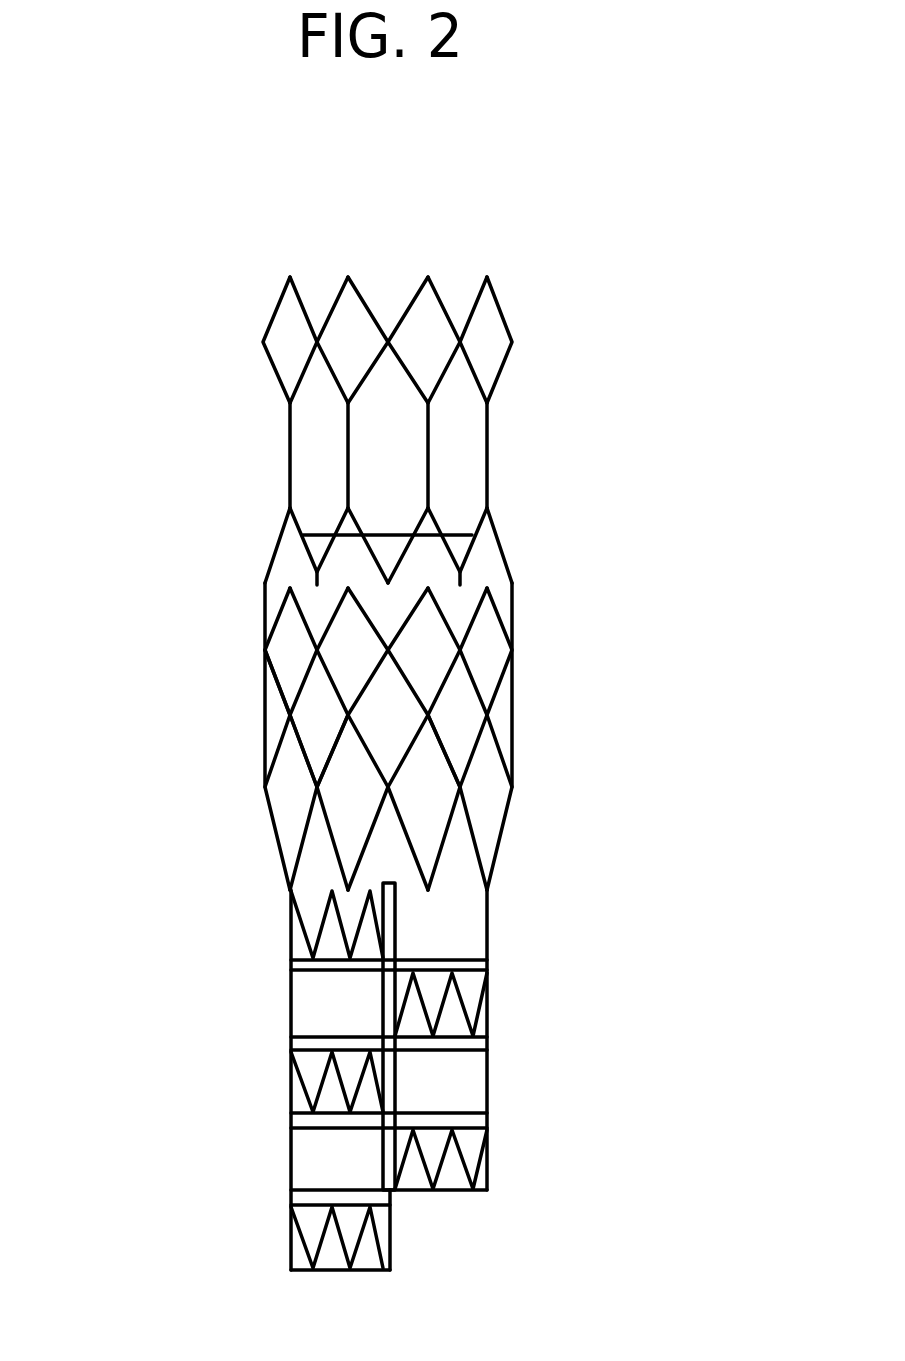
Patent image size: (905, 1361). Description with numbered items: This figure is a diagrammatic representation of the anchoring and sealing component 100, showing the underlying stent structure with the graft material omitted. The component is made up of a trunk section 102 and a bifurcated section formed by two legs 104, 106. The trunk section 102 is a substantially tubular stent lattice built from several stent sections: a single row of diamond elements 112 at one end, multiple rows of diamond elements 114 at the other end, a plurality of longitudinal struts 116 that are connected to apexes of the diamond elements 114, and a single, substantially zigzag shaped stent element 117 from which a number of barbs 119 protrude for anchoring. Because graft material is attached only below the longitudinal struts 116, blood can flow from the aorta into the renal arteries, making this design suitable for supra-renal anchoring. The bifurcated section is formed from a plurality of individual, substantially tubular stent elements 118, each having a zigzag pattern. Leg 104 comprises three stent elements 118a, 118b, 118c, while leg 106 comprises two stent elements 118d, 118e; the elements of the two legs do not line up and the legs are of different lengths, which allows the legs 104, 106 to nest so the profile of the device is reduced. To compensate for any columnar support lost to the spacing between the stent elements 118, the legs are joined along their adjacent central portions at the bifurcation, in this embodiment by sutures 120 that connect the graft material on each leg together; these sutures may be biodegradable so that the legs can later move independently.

The anchoring and sealing component 100 is at (103, 314).
The trunk section 102 is at (231, 893).
The leg 104 is at (292, 1012).
The leg 106 is at (487, 1083).
The diamond elements 112 is at (500, 307).
The diamond elements 114 is at (273, 688).
The longitudinal struts 116 is at (287, 458).
The zigzag shaped stent element 117 is at (292, 554).
The stent elements 118 is at (313, 953).
The stent element 118a is at (302, 956).
The stent element 118b is at (300, 1088).
The stent element 118c is at (300, 1250).
The stent element 118d is at (487, 1017).
The stent element 118e is at (487, 1172).
The barbs 119 is at (462, 580).
The sutures 120 is at (395, 933).